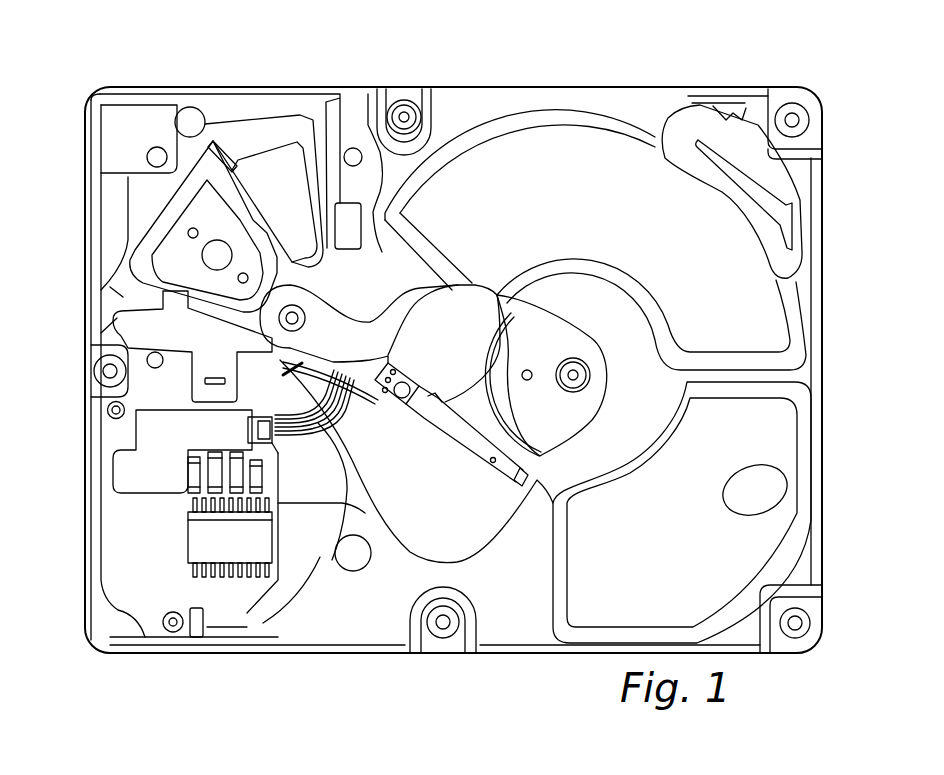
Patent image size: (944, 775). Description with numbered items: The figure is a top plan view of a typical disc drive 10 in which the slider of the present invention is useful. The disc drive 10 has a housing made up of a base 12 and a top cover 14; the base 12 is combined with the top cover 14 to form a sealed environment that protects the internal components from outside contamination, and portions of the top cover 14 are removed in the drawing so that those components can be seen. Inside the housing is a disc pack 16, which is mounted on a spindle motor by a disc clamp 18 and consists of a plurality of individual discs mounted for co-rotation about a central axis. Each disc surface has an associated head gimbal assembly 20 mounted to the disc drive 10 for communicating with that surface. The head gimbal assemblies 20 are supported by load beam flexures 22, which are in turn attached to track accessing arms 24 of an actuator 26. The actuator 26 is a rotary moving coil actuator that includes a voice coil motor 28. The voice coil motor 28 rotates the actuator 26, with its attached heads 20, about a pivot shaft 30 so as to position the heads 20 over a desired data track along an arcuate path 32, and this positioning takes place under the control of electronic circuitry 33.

The disc drive 10 is at (472, 83).
The base 12 is at (203, 653).
The top cover 14 is at (813, 375).
The disc pack 16 is at (412, 520).
The disc clamp 18 is at (568, 412).
The head gimbal assembly 20 is at (512, 482).
The load beam flexure 22 is at (450, 432).
The track accessing arm 24 is at (360, 368).
The actuator 26 is at (353, 307).
The voice coil motor 28 is at (228, 160).
The pivot shaft 30 is at (305, 318).
The arcuate path 32 is at (498, 503).
The electronic circuitry 33 is at (125, 532).